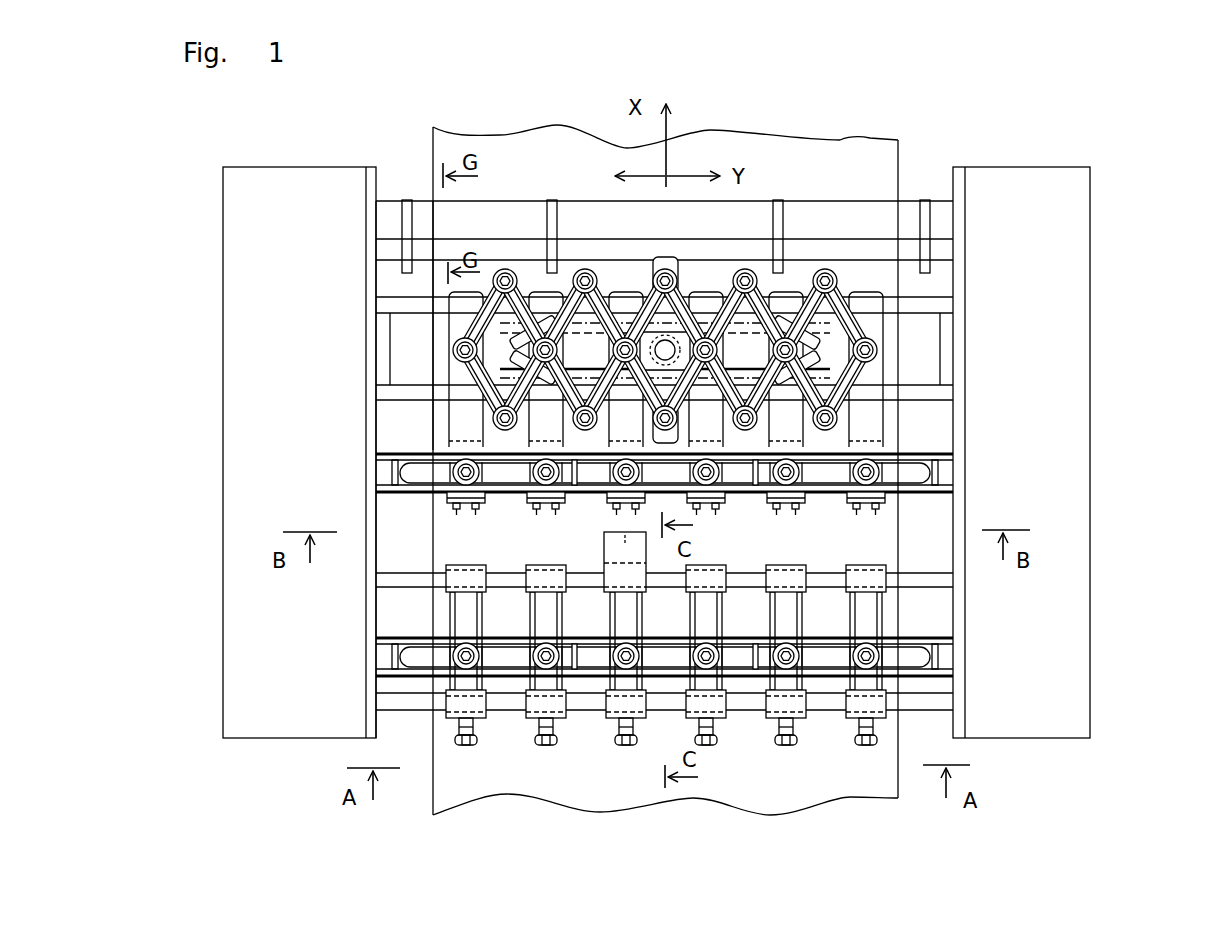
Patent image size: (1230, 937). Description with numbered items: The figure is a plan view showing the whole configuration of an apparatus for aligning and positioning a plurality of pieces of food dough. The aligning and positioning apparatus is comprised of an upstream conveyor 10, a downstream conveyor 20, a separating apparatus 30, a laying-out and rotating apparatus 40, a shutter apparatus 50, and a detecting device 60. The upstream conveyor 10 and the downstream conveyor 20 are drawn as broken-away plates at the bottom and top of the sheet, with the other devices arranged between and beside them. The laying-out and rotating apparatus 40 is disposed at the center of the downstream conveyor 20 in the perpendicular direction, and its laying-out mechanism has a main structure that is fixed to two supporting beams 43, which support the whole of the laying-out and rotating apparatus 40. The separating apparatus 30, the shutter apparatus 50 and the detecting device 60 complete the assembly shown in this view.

The upstream conveyor 10 is at (762, 787).
The downstream conveyor 20 is at (858, 163).
The separating apparatus 30 is at (997, 661).
The laying-out and rotating apparatus 40 is at (1040, 412).
The supporting beams 43 is at (908, 308).
The shutter apparatus 50 is at (985, 231).
The detecting device 60 is at (615, 540).